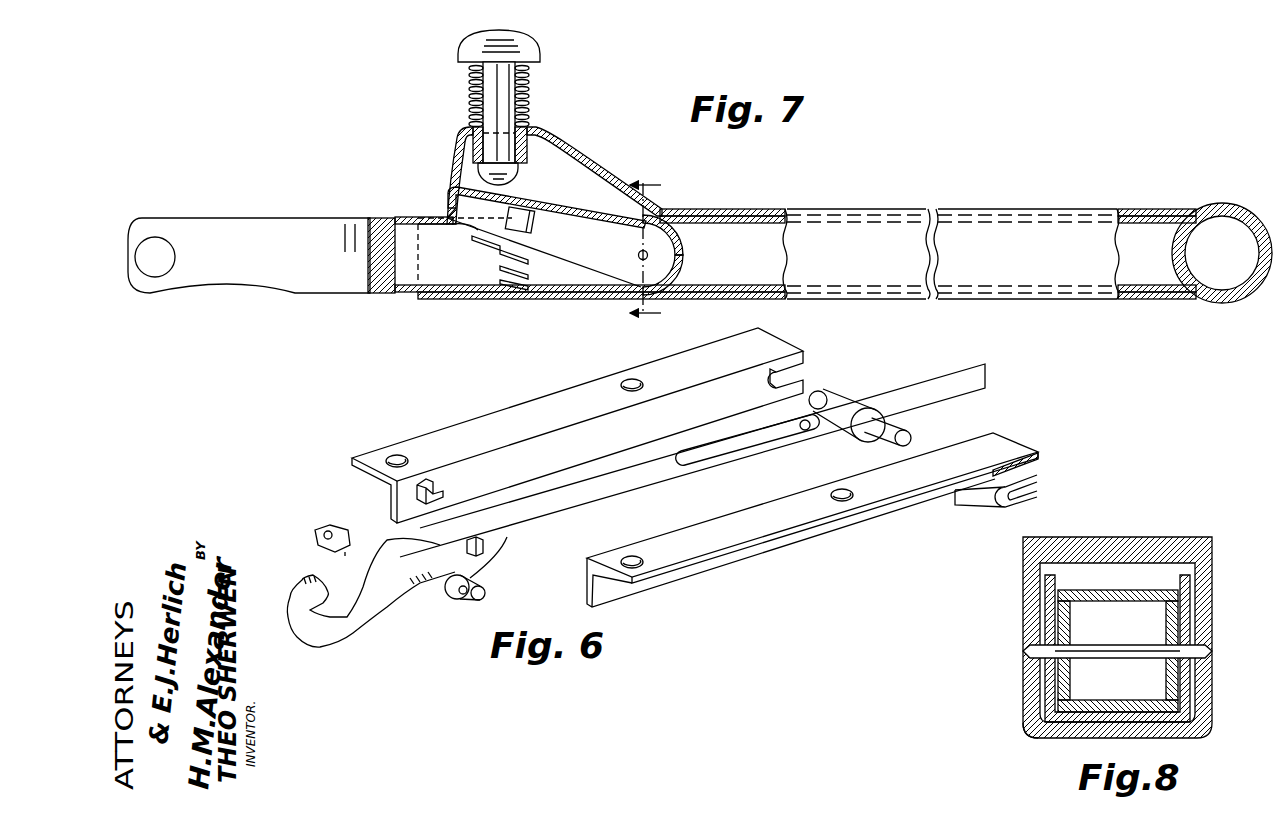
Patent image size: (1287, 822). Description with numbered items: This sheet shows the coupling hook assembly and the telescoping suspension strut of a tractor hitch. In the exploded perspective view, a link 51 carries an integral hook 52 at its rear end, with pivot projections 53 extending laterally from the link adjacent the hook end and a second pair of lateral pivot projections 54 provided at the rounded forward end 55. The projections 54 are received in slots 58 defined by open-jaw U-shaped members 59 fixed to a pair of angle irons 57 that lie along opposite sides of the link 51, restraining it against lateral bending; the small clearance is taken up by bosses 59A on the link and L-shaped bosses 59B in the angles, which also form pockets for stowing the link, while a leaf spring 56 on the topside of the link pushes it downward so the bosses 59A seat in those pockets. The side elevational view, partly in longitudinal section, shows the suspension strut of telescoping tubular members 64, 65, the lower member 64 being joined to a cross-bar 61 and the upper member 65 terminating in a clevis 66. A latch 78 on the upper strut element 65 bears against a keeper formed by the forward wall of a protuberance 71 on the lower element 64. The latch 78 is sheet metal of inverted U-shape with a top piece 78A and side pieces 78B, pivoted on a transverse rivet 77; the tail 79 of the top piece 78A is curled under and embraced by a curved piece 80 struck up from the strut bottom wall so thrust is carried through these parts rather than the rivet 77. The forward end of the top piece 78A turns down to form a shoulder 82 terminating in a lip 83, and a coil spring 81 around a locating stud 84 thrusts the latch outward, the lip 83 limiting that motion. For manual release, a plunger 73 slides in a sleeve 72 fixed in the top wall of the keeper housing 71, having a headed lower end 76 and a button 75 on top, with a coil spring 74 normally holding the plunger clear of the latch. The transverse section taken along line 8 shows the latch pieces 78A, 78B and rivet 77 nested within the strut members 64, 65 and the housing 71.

In FIG. 6, the link 51 is at (550, 546).
In FIG. 6, the hook 52 is at (340, 660).
In FIG. 6, the pivot projections 53 is at (345, 528).
In FIG. 6, the lateral pivot projections 54 is at (823, 394).
In FIG. 6, the rounded forward end 55 is at (860, 408).
In FIG. 6, the leaf spring 56 is at (715, 450).
In FIG. 6, the angle irons 57 is at (488, 417).
In FIG. 6, the slots 58 is at (800, 368).
In FIG. 6, the U-shaped members 59 is at (992, 513).
In FIG. 6, the bosses 59A is at (480, 538).
In FIG. 6, the bosses 59B is at (446, 494).
In FIG. 7, the cross-bar 61 is at (1250, 302).
In FIG. 7, the lower strut member 64 is at (1120, 299).
In FIG. 8, the lower strut member 64 is at (1030, 723).
In FIG. 7, the upper strut member 65 is at (1150, 293).
In FIG. 8, the upper strut member 65 is at (1050, 692).
In FIG. 7, the clevis 66 is at (312, 218).
In FIG. 7, the protuberance 71 is at (538, 134).
In FIG. 8, the protuberance 71 is at (1140, 537).
In FIG. 7, the sleeve 72 is at (523, 150).
In FIG. 7, the plunger 73 is at (512, 81).
In FIG. 7, the coil spring 74 is at (470, 97).
In FIG. 7, the button 75 is at (520, 42).
In FIG. 7, the headed lower end 76 is at (517, 178).
In FIG. 7, the rivet 77 is at (638, 254).
In FIG. 8, the rivet 77 is at (1128, 661).
In FIG. 7, the latch 78 is at (556, 260).
In FIG. 7, the top piece 78A is at (552, 207).
In FIG. 8, the top piece 78A is at (1108, 592).
In FIG. 7, the side pieces 78B is at (573, 270).
In FIG. 8, the side pieces 78B is at (1165, 626).
In FIG. 7, the tail 79 is at (681, 246).
In FIG. 7, the curved piece 80 is at (681, 268).
In FIG. 7, the coil spring 81 is at (498, 258).
In FIG. 7, the shoulder 82 is at (478, 232).
In FIG. 7, the lip 83 is at (440, 232).
In FIG. 7, the locating stud 84 is at (536, 226).
In FIG. 7, the section line 8- 8 is at (630, 244).